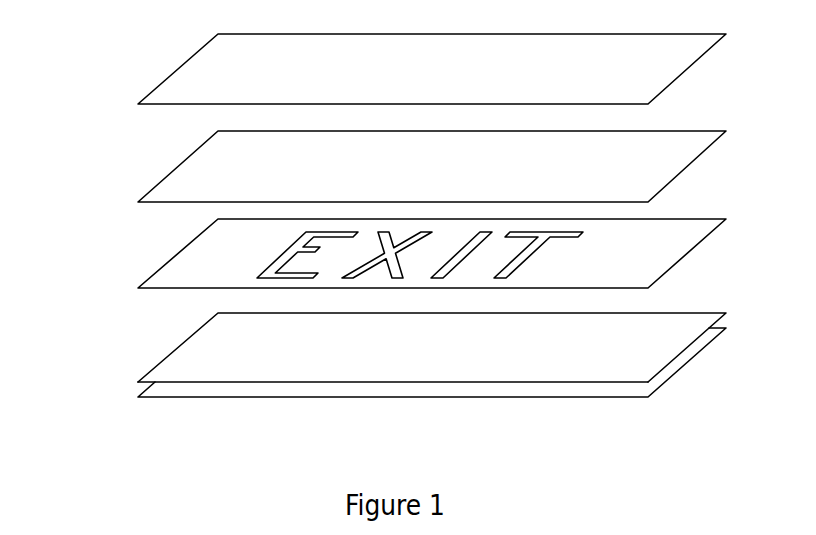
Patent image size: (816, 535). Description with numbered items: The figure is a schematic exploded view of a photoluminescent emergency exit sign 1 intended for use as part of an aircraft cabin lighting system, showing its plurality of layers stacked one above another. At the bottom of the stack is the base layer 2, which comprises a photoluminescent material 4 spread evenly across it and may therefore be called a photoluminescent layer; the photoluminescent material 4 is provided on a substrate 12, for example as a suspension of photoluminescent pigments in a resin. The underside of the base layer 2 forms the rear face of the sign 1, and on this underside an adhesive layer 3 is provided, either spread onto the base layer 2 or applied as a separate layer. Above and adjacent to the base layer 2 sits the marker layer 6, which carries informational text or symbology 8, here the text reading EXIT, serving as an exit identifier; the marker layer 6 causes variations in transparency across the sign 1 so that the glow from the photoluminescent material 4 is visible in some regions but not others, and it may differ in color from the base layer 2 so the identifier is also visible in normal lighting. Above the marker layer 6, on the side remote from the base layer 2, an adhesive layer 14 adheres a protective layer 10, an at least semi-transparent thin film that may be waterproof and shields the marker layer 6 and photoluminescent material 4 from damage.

The photoluminescent emergency exit sign 1 is at (106, 21).
The base layer 2 is at (456, 391).
The adhesive layer 3 is at (672, 377).
The photoluminescent material 4 is at (229, 350).
The marker layer 6 is at (456, 342).
The informational text or symbology 8 is at (310, 272).
The protective layer 10 is at (687, 70).
The substrate 12 is at (554, 383).
The adhesive layer 14 is at (690, 168).